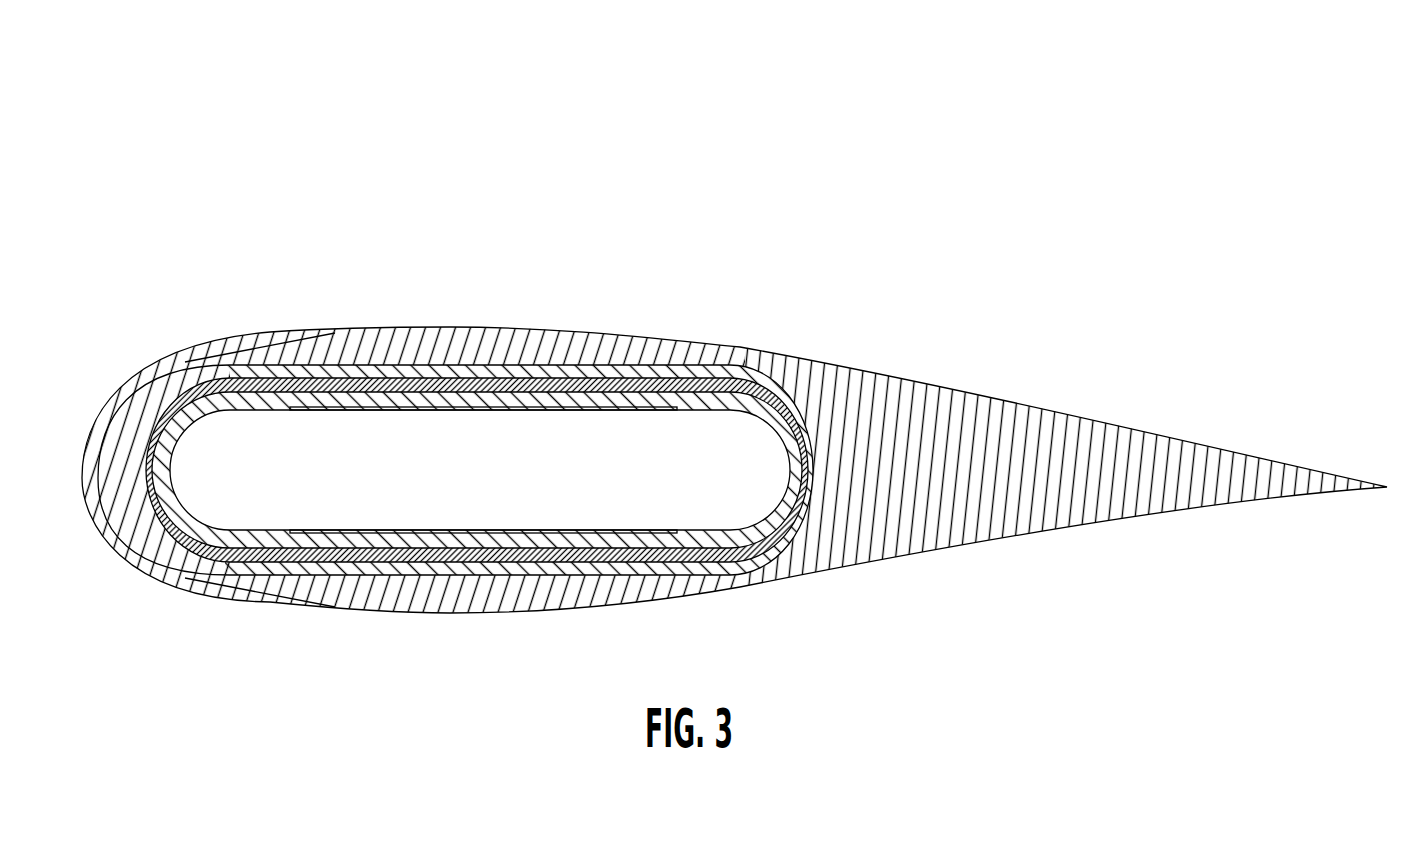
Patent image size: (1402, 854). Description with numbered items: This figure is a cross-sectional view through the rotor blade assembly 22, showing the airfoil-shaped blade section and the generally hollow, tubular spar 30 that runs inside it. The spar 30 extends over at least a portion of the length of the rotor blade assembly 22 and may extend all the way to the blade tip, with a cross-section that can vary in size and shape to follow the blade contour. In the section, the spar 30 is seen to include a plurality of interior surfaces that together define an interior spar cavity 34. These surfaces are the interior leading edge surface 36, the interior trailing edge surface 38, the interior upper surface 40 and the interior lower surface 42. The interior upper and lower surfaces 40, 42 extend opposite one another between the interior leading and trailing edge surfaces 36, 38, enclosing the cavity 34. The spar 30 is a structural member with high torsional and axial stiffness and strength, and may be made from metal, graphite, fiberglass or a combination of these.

The rotor blade assembly 22 is at (159, 170).
The spar 30 is at (708, 378).
The interior spar cavity 34 is at (545, 445).
The interior leading edge surface 36 is at (170, 473).
The interior trailing edge surface 38 is at (785, 474).
The interior upper surface 40 is at (293, 398).
The interior lower surface 42 is at (565, 532).